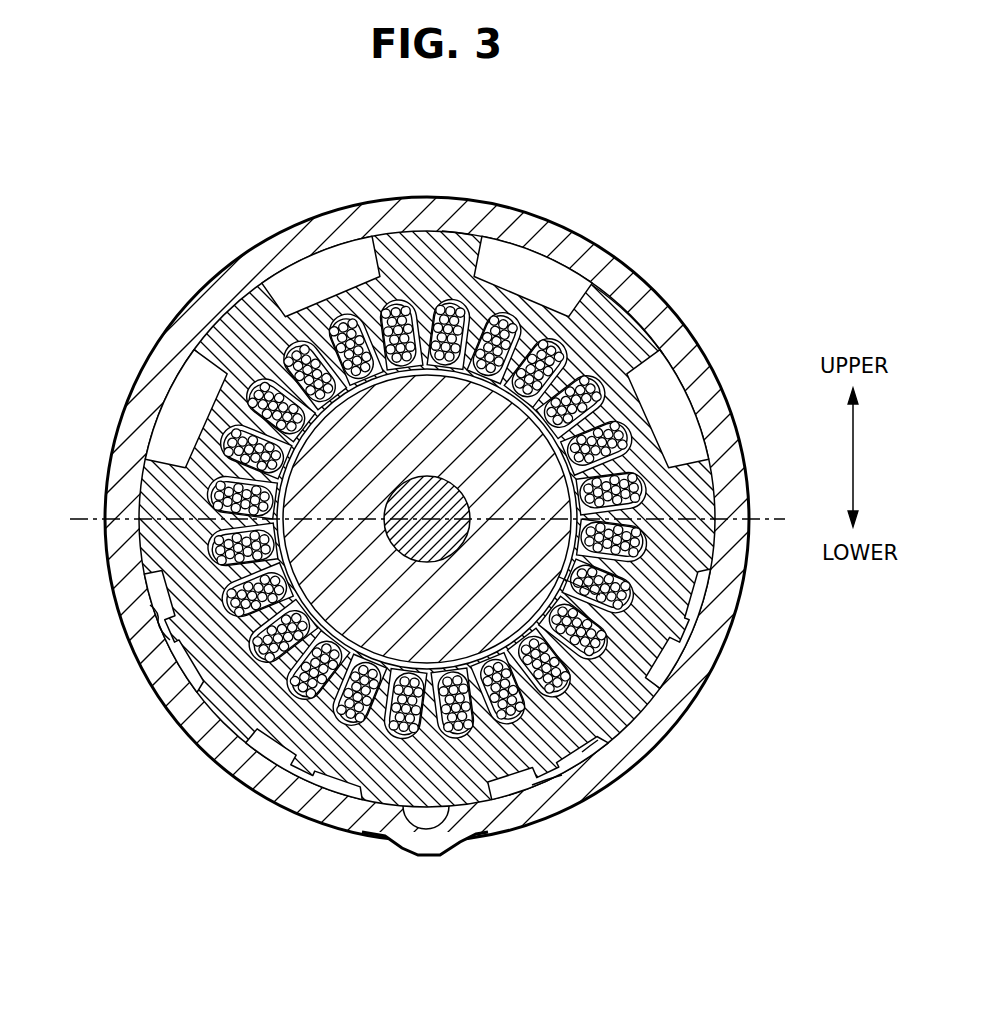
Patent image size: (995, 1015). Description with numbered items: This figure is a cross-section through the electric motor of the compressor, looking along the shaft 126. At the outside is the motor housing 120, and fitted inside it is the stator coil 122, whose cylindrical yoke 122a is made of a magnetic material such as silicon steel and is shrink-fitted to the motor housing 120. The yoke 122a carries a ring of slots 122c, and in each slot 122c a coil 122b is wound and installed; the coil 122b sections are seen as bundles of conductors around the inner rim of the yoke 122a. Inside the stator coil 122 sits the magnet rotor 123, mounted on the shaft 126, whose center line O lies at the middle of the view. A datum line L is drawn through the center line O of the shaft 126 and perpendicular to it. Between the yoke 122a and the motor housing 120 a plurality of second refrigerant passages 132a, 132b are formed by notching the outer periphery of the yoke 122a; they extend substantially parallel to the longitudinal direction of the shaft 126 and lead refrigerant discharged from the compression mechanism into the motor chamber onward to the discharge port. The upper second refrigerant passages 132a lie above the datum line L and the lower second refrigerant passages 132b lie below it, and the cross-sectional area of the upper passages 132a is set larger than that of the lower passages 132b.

The motor housing 120 is at (598, 263).
The stator coil 122 is at (497, 528).
The yoke 122a is at (613, 322).
The coil 122b is at (495, 285).
The slot 122c is at (588, 735).
The magnet rotor 123 is at (156, 624).
The shaft 126 is at (598, 595).
The upper second refrigerant passages 132a is at (305, 277).
The lower second refrigerant passages 132b is at (193, 673).
The center line of the shaft O is at (426, 520).
The datum line L is at (766, 523).